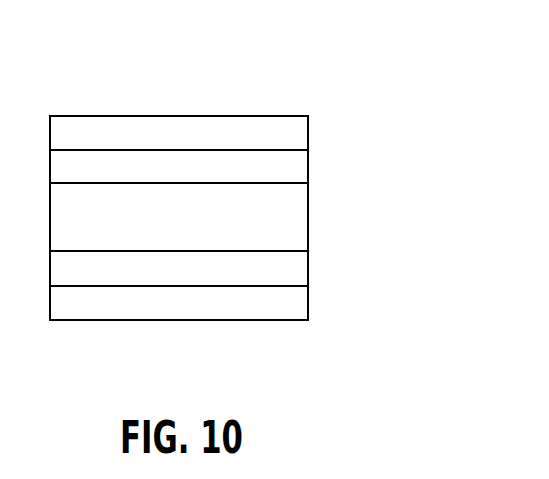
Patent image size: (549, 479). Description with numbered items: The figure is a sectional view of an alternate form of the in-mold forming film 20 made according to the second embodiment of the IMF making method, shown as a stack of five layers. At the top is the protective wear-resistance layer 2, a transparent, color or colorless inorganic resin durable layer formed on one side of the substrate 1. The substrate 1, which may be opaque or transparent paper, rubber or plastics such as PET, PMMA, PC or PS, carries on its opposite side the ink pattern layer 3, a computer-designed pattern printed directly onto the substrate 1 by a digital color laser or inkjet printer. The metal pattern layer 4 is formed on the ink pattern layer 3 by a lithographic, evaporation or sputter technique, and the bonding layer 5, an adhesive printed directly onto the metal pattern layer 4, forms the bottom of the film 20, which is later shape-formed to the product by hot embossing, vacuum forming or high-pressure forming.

The in-mold forming film 20 is at (235, 113).
The protective wear-resistance layer 2 is at (288, 130).
The substrate 1 is at (297, 170).
The ink pattern layer 3 is at (290, 219).
The metal pattern layer 4 is at (292, 260).
The bonding layer 5 is at (287, 312).